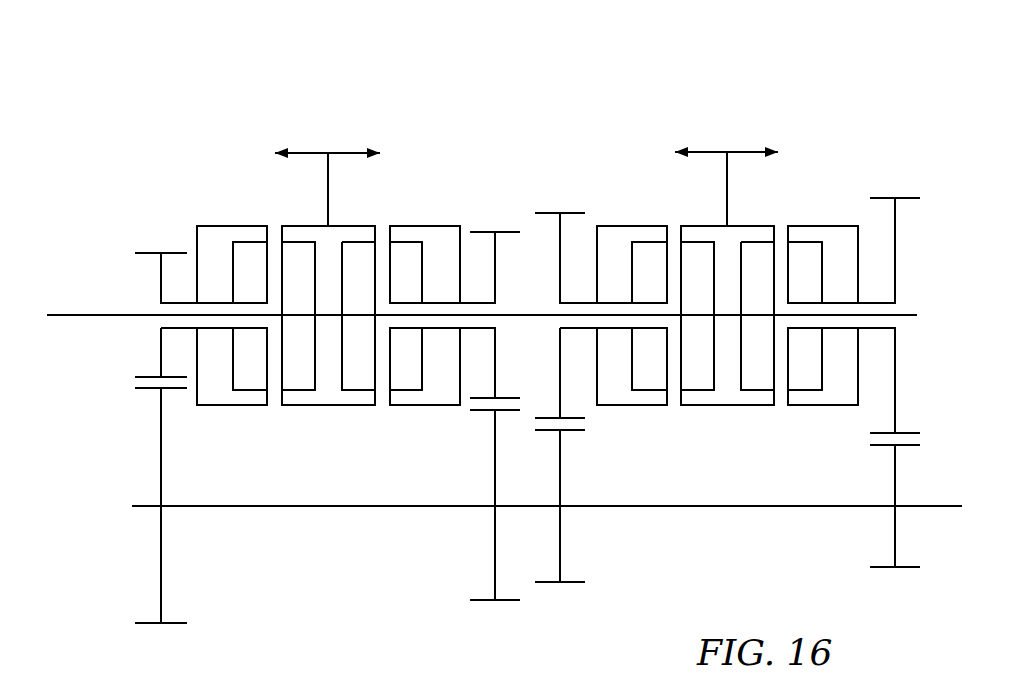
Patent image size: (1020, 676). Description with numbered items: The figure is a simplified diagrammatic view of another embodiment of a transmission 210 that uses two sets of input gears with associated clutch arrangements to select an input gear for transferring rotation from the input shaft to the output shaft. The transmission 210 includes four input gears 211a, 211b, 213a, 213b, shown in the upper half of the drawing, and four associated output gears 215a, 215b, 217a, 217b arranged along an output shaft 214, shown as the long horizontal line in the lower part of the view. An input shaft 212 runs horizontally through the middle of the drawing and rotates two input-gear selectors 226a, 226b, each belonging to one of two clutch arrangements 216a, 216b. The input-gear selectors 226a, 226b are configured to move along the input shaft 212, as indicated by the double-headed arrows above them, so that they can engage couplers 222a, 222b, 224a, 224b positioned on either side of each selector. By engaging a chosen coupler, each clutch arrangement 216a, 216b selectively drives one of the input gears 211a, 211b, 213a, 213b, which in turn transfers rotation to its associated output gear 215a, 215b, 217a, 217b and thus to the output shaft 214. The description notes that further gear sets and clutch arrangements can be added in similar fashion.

The transmission 210 is at (158, 97).
The input shaft 212 is at (95, 312).
The output shaft 214 is at (943, 497).
The input gear 211a is at (145, 242).
The input gear 211b is at (567, 197).
The input gear 213a is at (489, 225).
The input gear 213b is at (902, 190).
The output gear 215a is at (153, 425).
The output gear 215b is at (572, 532).
The output gear 217a is at (485, 545).
The output gear 217b is at (880, 528).
The clutch arrangement 216a is at (244, 193).
The clutch arrangement 216b is at (833, 122).
The coupler 222a is at (203, 207).
The coupler 222b is at (635, 223).
The coupler 224a is at (420, 217).
The coupler 224b is at (813, 223).
The input-gear selector 226a is at (362, 215).
The input-gear selector 226b is at (693, 223).